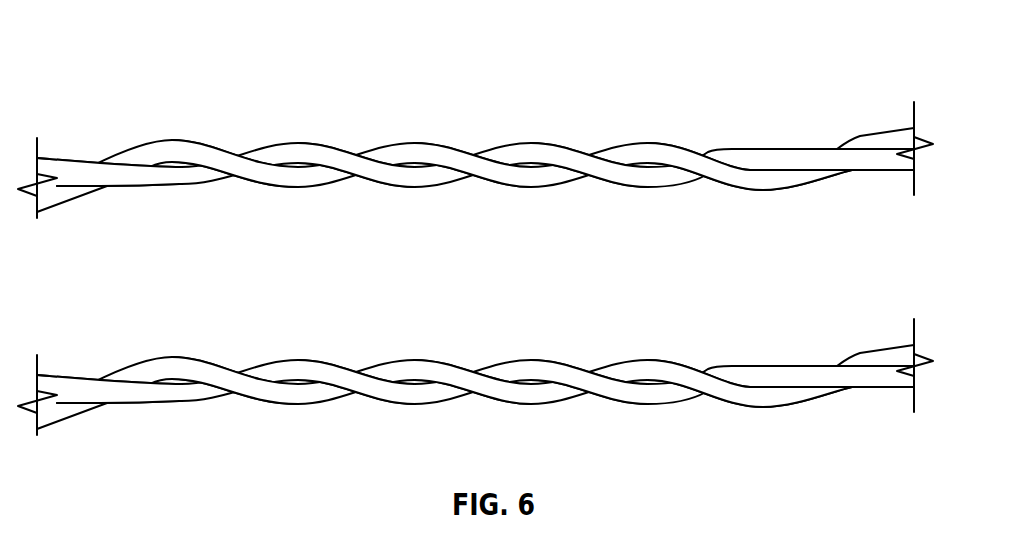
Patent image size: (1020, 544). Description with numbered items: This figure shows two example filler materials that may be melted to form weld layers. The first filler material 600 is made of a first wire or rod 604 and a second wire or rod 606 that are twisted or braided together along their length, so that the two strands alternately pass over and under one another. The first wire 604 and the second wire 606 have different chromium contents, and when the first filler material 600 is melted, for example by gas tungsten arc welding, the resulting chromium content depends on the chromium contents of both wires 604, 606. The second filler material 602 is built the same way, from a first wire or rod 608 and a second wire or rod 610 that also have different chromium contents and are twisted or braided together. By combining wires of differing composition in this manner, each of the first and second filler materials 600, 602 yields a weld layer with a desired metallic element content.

The first filler material 600 is at (475, 116).
The second filler material 602 is at (475, 343).
The first wire or rod 604 is at (173, 146).
The second wire or rod 606 is at (93, 172).
The first wire or rod 608 is at (170, 357).
The second wire or rod 610 is at (82, 388).